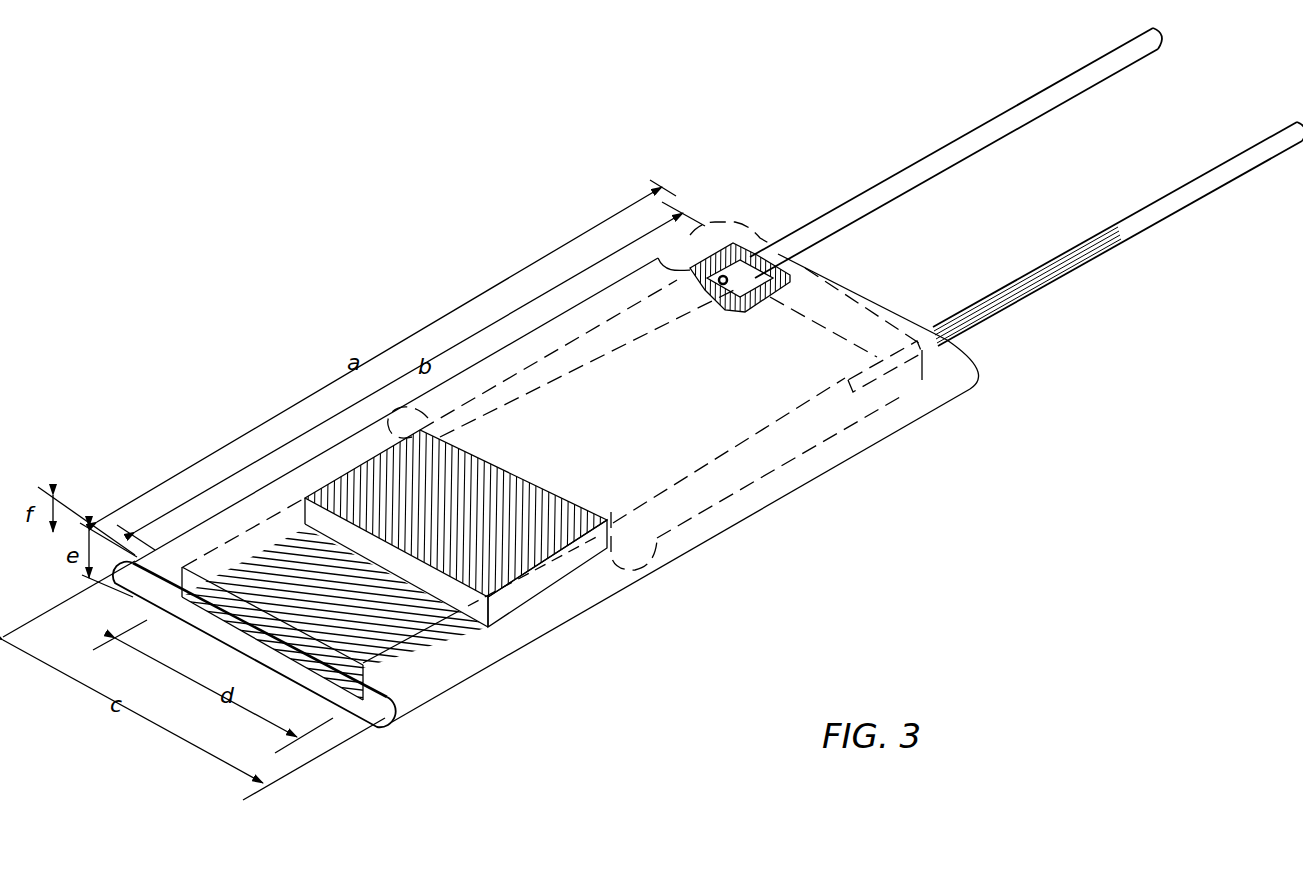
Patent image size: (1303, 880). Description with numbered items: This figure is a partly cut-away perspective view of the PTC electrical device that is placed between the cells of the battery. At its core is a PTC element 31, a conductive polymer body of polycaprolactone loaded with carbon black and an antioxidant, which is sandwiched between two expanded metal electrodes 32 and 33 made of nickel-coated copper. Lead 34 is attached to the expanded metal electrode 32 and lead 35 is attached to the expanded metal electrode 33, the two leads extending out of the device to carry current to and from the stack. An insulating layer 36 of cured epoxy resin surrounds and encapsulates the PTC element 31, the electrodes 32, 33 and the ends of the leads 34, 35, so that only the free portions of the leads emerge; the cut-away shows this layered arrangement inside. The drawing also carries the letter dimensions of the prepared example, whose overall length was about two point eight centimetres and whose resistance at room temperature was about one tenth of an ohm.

The PTC element 31 is at (464, 548).
The expanded metal electrode 32 is at (602, 584).
The expanded metal electrode 33 is at (387, 620).
The lead 34 is at (956, 153).
The lead 35 is at (1118, 234).
The insulating layer 36 is at (766, 422).